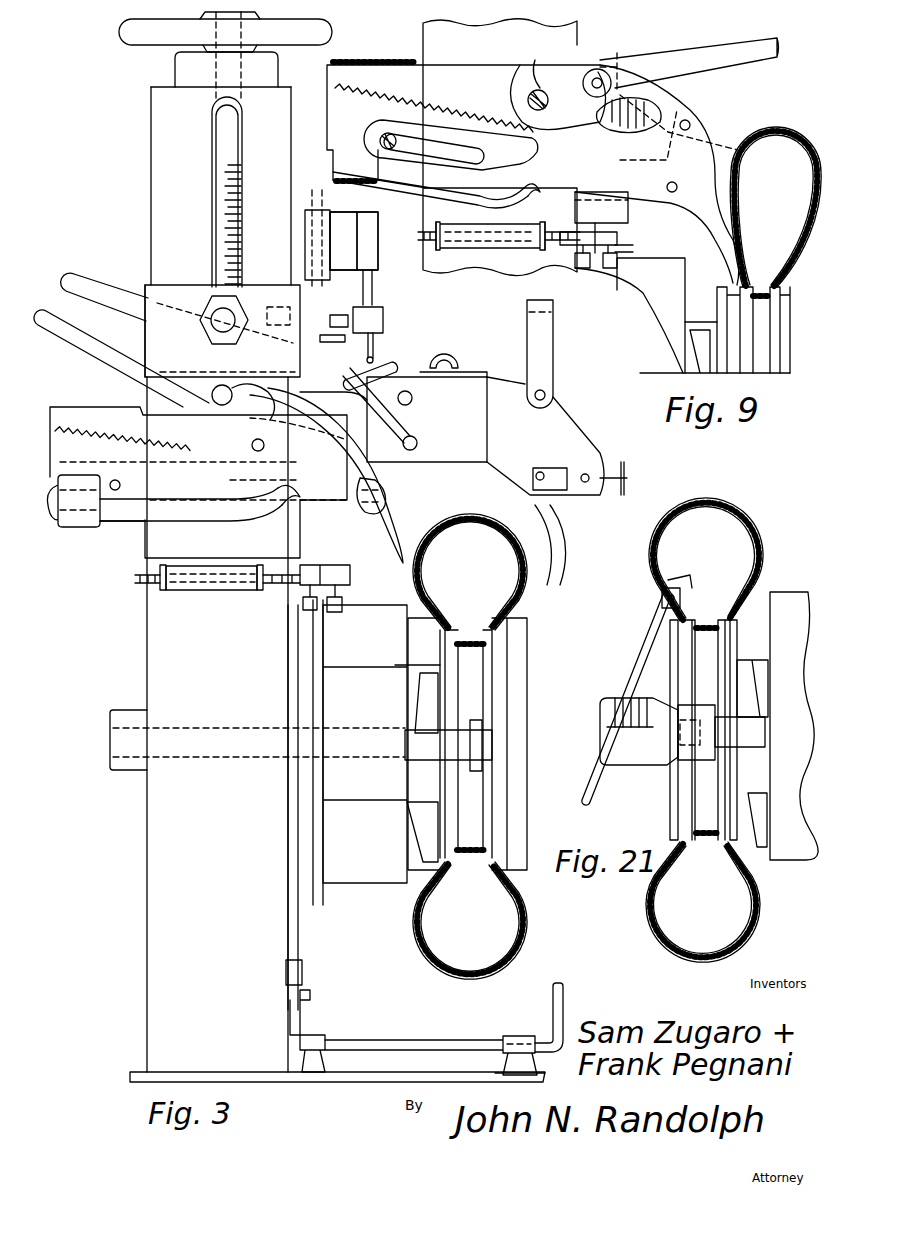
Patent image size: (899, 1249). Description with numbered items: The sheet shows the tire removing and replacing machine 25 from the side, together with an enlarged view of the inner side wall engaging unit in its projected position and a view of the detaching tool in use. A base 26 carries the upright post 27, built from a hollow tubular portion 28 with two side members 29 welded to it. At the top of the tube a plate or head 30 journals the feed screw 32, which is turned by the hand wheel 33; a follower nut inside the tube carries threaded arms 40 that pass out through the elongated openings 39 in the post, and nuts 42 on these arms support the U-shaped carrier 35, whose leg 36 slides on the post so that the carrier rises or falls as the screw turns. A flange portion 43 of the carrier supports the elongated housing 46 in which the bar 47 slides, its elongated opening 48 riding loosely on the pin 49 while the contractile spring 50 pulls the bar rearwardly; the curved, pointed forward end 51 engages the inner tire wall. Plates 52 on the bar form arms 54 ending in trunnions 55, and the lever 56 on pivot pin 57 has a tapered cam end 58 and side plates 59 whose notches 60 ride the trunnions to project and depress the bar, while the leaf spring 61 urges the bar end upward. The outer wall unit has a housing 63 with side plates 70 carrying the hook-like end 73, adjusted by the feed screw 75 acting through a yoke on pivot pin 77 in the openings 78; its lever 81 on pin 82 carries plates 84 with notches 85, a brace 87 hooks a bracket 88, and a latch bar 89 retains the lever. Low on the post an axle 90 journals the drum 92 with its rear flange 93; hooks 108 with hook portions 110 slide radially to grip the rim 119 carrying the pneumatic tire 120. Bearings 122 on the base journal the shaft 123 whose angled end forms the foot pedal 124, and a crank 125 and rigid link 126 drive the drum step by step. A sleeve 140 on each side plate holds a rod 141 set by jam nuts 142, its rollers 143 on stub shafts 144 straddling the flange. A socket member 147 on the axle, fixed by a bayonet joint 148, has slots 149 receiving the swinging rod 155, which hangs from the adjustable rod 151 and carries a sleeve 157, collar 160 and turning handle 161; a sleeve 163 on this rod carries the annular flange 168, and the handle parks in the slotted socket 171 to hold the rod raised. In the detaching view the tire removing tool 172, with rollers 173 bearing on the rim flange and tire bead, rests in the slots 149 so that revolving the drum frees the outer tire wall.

In FIG. 3, the tire removing and replacing machine 25 is at (344, 908).
In FIG. 3, the base 26 is at (375, 1083).
In FIG. 3, the upright post or standard 27 is at (142, 657).
In FIG. 3, the tubular portion 28 is at (280, 84).
In FIG. 3, the side members 29 is at (150, 212).
In FIG. 3, the plate or head 30 is at (178, 60).
In FIG. 3, the feed screw 32 is at (242, 183).
In FIG. 3, the hand wheel 33 is at (133, 45).
In FIG. 3, the carrier 35 is at (146, 343).
In FIG. 9, the carrier 35 is at (416, 44).
In FIG. 3, the leg of carrier 36 is at (156, 349).
In FIG. 3, the elongated openings 39 is at (242, 150).
In FIG. 3, the threaded arms 40 is at (232, 313).
In FIG. 3, the nut 42 is at (233, 341).
In FIG. 9, the flange portion 43 is at (427, 189).
In FIG. 3, the housing 46 is at (58, 408).
In FIG. 9, the housing 46 is at (463, 121).
In FIG. 3, the bar 47 is at (126, 500).
In FIG. 9, the bar 47 is at (478, 170).
In FIG. 3, the elongated opening 48 is at (58, 512).
In FIG. 9, the elongated opening 48 is at (446, 150).
In FIG. 3, the pin 49 is at (120, 484).
In FIG. 9, the pin 49 is at (380, 140).
In FIG. 3, the contractile spring 50 is at (95, 430).
In FIG. 9, the contractile spring 50 is at (408, 97).
In FIG. 3, the forward end of bar 51 is at (388, 527).
In FIG. 9, the forward end of bar 51 is at (650, 250).
In FIG. 3, the plates or flanges 52 is at (326, 398).
In FIG. 9, the plates or flanges 52 is at (670, 116).
In FIG. 9, the arms 54 is at (614, 112).
In FIG. 9, the trunnion 55 is at (605, 72).
In FIG. 3, the lever 56 is at (53, 335).
In FIG. 9, the lever 56 is at (698, 52).
In FIG. 3, the pivot pin or bolt 57 is at (260, 452).
In FIG. 9, the pivot pin or bolt 57 is at (537, 64).
In FIG. 3, the tapered lower end 58 is at (298, 431).
In FIG. 9, the tapered lower end 58 is at (520, 114).
In FIG. 9, the plates 59 is at (598, 78).
In FIG. 3, the notches 60 is at (224, 406).
In FIG. 9, the notches 60 is at (546, 94).
In FIG. 3, the leaf spring 61 is at (194, 520).
In FIG. 9, the leaf spring 61 is at (510, 196).
In FIG. 3, the housing 63 is at (453, 460).
In FIG. 3, the side plates 70 is at (500, 474).
In FIG. 3, the hook-like end 73 is at (550, 571).
In FIG. 3, the feed screw 75 is at (627, 479).
In FIG. 3, the pivot pin 77 is at (546, 470).
In FIG. 3, the opening 78 is at (583, 482).
In FIG. 3, the lever 81 is at (93, 287).
In FIG. 3, the pin 82 is at (413, 399).
In FIG. 3, the plates 84 is at (440, 356).
In FIG. 3, the recess or notch 85 is at (455, 352).
In FIG. 3, the brace 87 is at (322, 339).
In FIG. 3, the flange or bracket 88 is at (340, 313).
In FIG. 3, the latch bar 89 is at (549, 356).
In FIG. 3, the axle 90 is at (428, 762).
In FIG. 21, the axle 90 is at (760, 720).
In FIG. 3, the drum 92 is at (345, 886).
In FIG. 9, the drum 92 is at (642, 270).
In FIG. 21, the drum 92 is at (782, 594).
In FIG. 3, the flange 93 is at (326, 796).
In FIG. 9, the flange 93 is at (600, 268).
In FIG. 3, the hook 108 is at (418, 690).
In FIG. 9, the hook 108 is at (688, 352).
In FIG. 21, the hook 108 is at (768, 665).
In FIG. 3, the hook portion 110 is at (446, 871).
In FIG. 9, the hook portion 110 is at (710, 305).
In FIG. 21, the hook portion 110 is at (738, 647).
In FIG. 3, the wheel or rim 119 is at (500, 810).
In FIG. 9, the wheel or rim 119 is at (786, 346).
In FIG. 21, the wheel or rim 119 is at (668, 824).
In FIG. 3, the pneumatic tire 120 is at (470, 976).
In FIG. 9, the pneumatic tire 120 is at (743, 255).
In FIG. 21, the pneumatic tire 120 is at (672, 940).
In FIG. 3, the bearings 122 is at (328, 1038).
In FIG. 3, the shaft 123 is at (400, 1042).
In FIG. 3, the foot pedal 124 is at (563, 995).
In FIG. 3, the crank 125 is at (303, 1010).
In FIG. 3, the rigid link 126 is at (285, 907).
In FIG. 3, the sleeve 140 is at (212, 593).
In FIG. 9, the sleeve 140 is at (492, 248).
In FIG. 3, the rod 141 is at (282, 596).
In FIG. 9, the rod 141 is at (570, 228).
In FIG. 3, the jam nuts 142 is at (160, 593).
In FIG. 9, the jam nuts 142 is at (438, 250).
In FIG. 3, the rollers 143 is at (355, 606).
In FIG. 9, the rollers 143 is at (572, 265).
In FIG. 3, the stub shafts 144 is at (350, 584).
In FIG. 9, the stub shafts 144 is at (618, 250).
In FIG. 21, the socket member 147 is at (625, 766).
In FIG. 21, the bayonet joint 148 is at (695, 765).
In FIG. 21, the slots 149 is at (638, 698).
In FIG. 3, the rod 151 is at (380, 492).
In FIG. 3, the rod 155 is at (375, 291).
In FIG. 3, the sleeve 157 is at (375, 231).
In FIG. 3, the collar 160 is at (355, 251).
In FIG. 3, the turning handle 161 is at (316, 206).
In FIG. 3, the sleeve 163 is at (380, 339).
In FIG. 3, the annular flange 168 is at (372, 352).
In FIG. 3, the slotted socket 171 is at (334, 216).
In FIG. 21, the tire removing tool 172 is at (634, 652).
In FIG. 21, the rollers or sleeves 173 is at (662, 596).